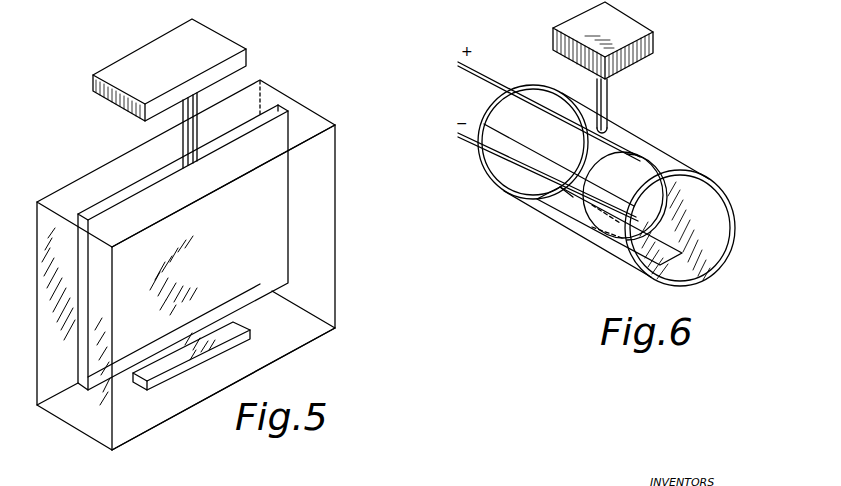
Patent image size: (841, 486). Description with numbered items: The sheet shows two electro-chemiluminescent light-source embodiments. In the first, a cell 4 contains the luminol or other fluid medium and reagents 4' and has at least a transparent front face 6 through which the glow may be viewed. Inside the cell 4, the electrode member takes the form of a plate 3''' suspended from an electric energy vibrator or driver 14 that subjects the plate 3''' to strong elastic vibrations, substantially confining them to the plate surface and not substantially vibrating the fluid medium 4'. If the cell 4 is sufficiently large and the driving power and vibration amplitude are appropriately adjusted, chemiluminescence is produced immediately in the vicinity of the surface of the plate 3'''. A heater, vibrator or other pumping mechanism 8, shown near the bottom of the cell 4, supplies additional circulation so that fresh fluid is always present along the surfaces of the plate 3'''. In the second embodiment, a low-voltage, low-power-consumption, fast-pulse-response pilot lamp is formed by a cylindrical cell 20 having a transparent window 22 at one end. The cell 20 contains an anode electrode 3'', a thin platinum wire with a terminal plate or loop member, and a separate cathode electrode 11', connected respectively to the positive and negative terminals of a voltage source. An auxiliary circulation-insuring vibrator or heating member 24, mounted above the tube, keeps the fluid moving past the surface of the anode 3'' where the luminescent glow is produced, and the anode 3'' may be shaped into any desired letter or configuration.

In FIG. 5, the cell 4 is at (186, 275).
In FIG. 5, the fluid medium 4' is at (237, 186).
In FIG. 5, the transparent front face 6 is at (305, 340).
In FIG. 5, the plate 3''' is at (201, 236).
In FIG. 5, the electric energy vibrator or driver 14 is at (239, 65).
In FIG. 5, the pumping mechanism 8 is at (176, 374).
In FIG. 6, the cylindrical cell 20 is at (647, 275).
In FIG. 6, the transparent window 22 is at (686, 243).
In FIG. 6, the anode electrode 3'' is at (644, 187).
In FIG. 6, the cathode electrode 11' is at (609, 226).
In FIG. 6, the circulation-insuring vibrator or heating member 24 is at (633, 27).